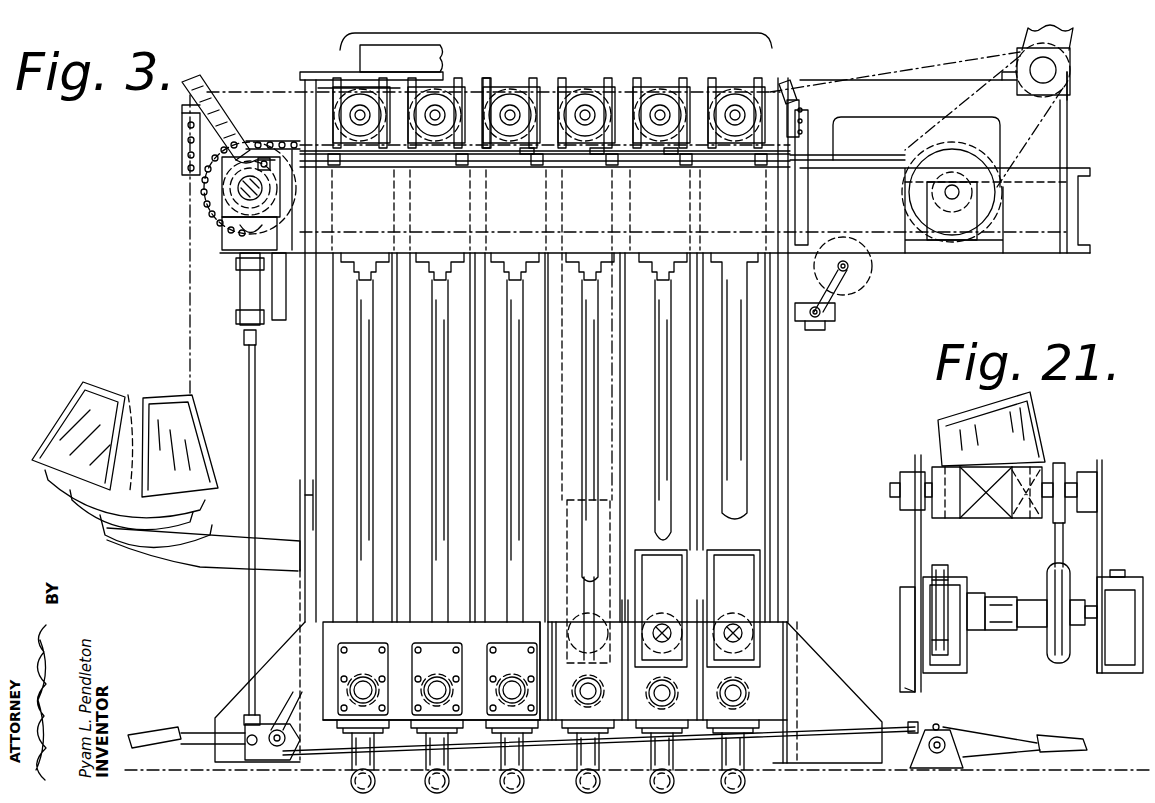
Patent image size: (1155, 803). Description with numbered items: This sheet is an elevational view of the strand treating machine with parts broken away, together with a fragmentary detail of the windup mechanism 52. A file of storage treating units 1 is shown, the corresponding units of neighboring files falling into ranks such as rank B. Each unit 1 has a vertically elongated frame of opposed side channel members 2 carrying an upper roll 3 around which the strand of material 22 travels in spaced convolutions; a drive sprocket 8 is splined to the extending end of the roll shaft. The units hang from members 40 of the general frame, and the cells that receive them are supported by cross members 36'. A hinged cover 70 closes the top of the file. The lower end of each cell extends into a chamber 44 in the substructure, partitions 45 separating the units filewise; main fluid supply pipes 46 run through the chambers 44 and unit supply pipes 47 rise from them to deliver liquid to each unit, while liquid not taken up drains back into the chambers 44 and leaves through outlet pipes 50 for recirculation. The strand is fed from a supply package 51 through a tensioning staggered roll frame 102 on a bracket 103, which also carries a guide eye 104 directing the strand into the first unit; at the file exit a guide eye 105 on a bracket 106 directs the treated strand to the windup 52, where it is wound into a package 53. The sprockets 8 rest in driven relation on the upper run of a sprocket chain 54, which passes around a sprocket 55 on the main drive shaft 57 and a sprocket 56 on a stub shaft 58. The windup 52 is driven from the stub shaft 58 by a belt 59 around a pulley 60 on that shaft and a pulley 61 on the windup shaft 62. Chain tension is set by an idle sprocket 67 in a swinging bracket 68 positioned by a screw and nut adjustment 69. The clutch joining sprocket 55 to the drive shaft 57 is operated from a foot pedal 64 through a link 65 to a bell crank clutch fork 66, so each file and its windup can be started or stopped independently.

In FIG. 3, the storage treating unit 1 is at (585, 82).
In FIG. 3, the side channel member 2 is at (663, 583).
In FIG. 3, the roll 3 is at (530, 150).
In FIG. 3, the drive sprocket 8 is at (503, 86).
In FIG. 3, the strand of material 22 is at (188, 270).
In FIG. 3, the cross member 36' is at (547, 178).
In FIG. 3, the frame member 40 is at (437, 162).
In FIG. 3, the chamber 44 is at (348, 616).
In FIG. 3, the partition 45 is at (555, 697).
In FIG. 3, the main fluid supply pipe 46 is at (364, 688).
In FIG. 3, the unit supply pipe 47 is at (514, 598).
In FIG. 3, the outlet pipe 50 is at (377, 781).
In FIG. 3, the supply package 51 is at (157, 385).
In FIG. 3, the windup mechanism 52 is at (1079, 82).
In FIG. 21, the windup mechanism 52 is at (1082, 466).
In FIG. 21, the package 53 is at (960, 420).
In FIG. 3, the sprocket chain 54 is at (291, 148).
In FIG. 21, the sprocket chain 54 is at (935, 640).
In FIG. 3, the sprocket 55 is at (247, 152).
In FIG. 3, the sprocket 56 is at (985, 224).
In FIG. 3, the main drive shaft 57 is at (265, 187).
In FIG. 3, the stub shaft 58 is at (953, 200).
In FIG. 21, the stub shaft 58 is at (962, 640).
In FIG. 21, the belt 59 is at (1056, 541).
In FIG. 21, the pulley 60 is at (1050, 662).
In FIG. 21, the pulley 61 is at (1062, 462).
In FIG. 3, the windup shaft 62 is at (1050, 70).
In FIG. 21, the windup shaft 62 is at (932, 518).
In FIG. 3, the foot pedal 64 is at (160, 730).
In FIG. 3, the link 65 is at (250, 437).
In FIG. 3, the bell crank clutch fork 66 is at (245, 240).
In FIG. 3, the idle sprocket 67 is at (866, 288).
In FIG. 3, the swinging bracket 68 is at (836, 312).
In FIG. 3, the screw and nut adjustment 69 is at (820, 323).
In FIG. 3, the cover 70 is at (336, 75).
In FIG. 3, the staggered roll frame 102 is at (180, 146).
In FIG. 3, the bracket 103 is at (184, 114).
In FIG. 3, the guide eye 104 is at (201, 78).
In FIG. 3, the guide eye 105 is at (791, 80).
In FIG. 3, the bracket 106 is at (801, 102).
In FIG. 3, the rank B is at (820, 790).